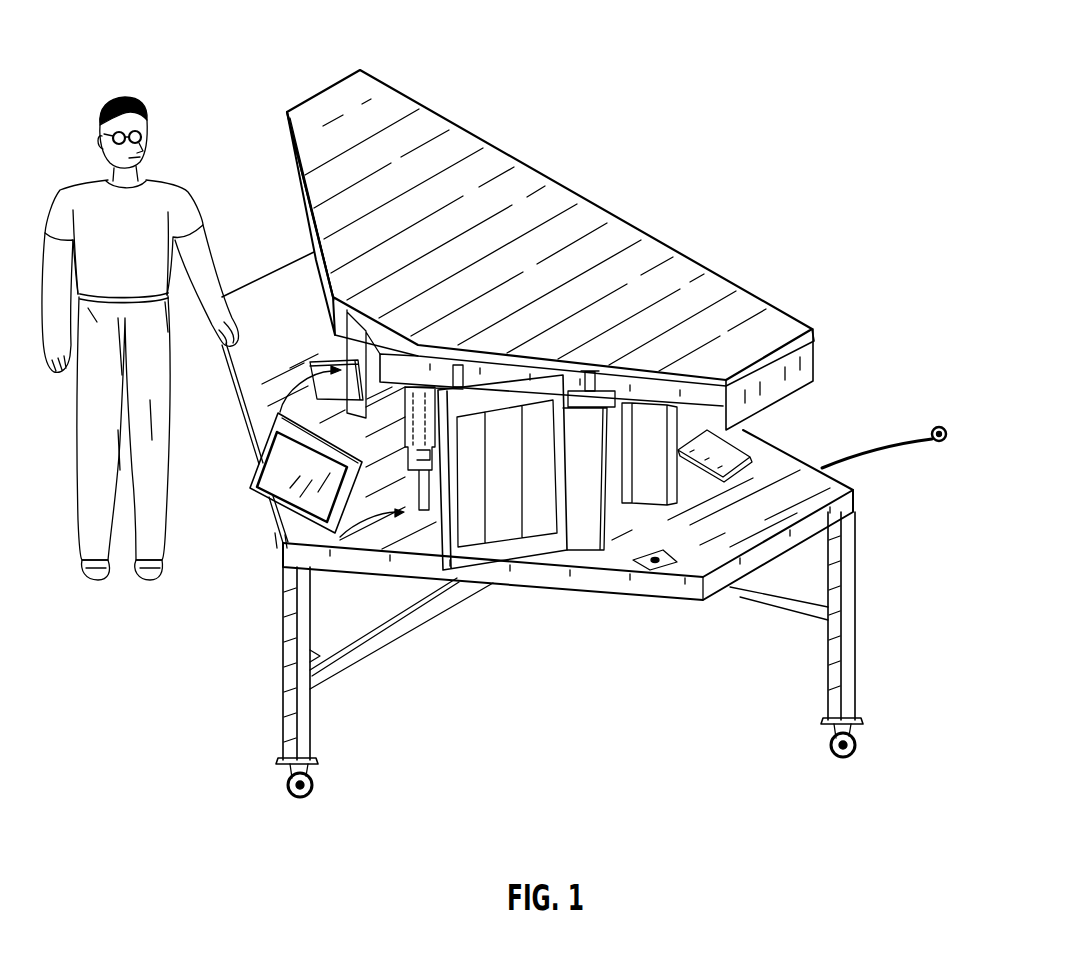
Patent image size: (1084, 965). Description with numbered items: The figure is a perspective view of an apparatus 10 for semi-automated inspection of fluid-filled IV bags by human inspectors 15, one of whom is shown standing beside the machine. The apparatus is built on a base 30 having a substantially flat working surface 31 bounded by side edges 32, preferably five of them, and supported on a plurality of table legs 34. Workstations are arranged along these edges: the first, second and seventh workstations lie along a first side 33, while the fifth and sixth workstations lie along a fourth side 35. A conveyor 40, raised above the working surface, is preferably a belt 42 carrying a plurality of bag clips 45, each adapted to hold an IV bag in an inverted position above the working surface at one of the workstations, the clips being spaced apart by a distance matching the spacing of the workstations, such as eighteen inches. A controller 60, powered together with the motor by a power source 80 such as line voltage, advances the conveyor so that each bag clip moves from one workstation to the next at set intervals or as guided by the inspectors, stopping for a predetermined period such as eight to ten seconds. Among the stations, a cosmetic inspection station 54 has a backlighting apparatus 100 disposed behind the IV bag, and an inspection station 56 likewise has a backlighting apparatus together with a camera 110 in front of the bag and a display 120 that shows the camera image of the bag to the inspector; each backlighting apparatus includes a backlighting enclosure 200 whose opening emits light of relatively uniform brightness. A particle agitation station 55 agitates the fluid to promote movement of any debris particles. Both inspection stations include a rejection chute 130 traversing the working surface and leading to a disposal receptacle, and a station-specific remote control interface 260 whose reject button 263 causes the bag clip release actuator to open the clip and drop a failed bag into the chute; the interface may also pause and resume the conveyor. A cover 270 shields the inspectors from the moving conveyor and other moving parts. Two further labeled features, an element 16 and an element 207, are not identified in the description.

The apparatus 10 is at (725, 155).
The human inspectors 15 is at (125, 100).
The floor 16 is at (417, 706).
The base 30 is at (878, 503).
The working surface 31 is at (800, 477).
The side edges 32 is at (280, 536).
The first side 33 is at (752, 428).
The table legs 34 is at (220, 352).
The fourth side 35 is at (592, 577).
The conveyor 40 is at (550, 250).
The belt 42 is at (698, 400).
The bag clips 45 is at (458, 377).
The cosmetic inspection station 54 is at (239, 444).
The particle agitation station 55 is at (307, 562).
The inspection station 56 is at (540, 641).
The controller 60 is at (273, 533).
The power source 80 is at (933, 428).
The backlighting apparatus 100 is at (671, 375).
The backlighting enclosure 200 is at (381, 400).
The camera 110 is at (590, 524).
The display 120 is at (535, 543).
The rejection chute 130 is at (255, 489).
The panel 207 is at (617, 435).
The remote control interface 260 is at (664, 567).
The reject button 263 is at (651, 567).
The cover 270 is at (620, 243).